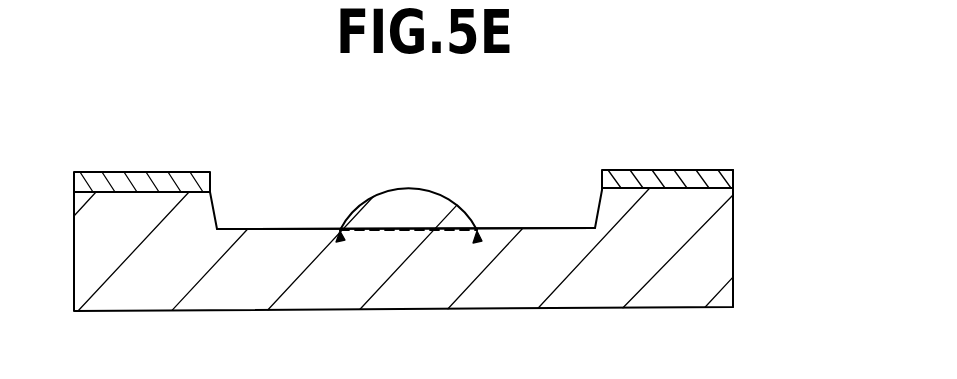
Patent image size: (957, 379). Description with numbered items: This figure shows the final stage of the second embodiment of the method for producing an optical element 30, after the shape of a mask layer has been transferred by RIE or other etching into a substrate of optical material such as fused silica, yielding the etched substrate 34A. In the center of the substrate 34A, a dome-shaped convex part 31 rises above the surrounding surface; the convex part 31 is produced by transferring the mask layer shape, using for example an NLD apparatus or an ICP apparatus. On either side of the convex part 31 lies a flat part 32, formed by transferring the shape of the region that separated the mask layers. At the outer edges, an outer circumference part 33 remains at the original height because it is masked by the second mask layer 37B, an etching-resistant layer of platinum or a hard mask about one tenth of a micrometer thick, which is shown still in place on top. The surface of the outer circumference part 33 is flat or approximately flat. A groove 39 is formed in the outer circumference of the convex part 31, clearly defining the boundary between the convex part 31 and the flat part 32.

The optical element 30 is at (310, 141).
The convex part 31 is at (408, 187).
The flat part 32 is at (546, 228).
The outer circumference part 33 is at (740, 190).
The substrate 34A is at (720, 271).
The second mask layer 37B is at (122, 172).
The groove 39 is at (479, 236).